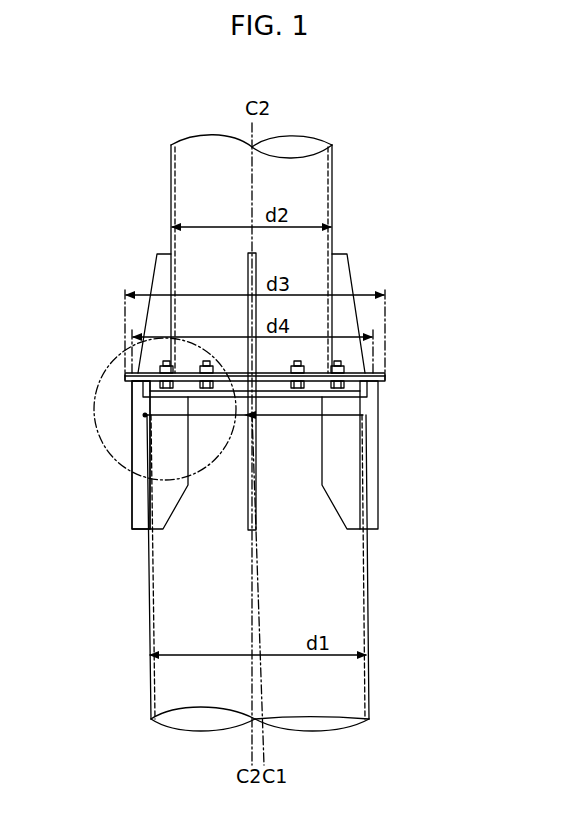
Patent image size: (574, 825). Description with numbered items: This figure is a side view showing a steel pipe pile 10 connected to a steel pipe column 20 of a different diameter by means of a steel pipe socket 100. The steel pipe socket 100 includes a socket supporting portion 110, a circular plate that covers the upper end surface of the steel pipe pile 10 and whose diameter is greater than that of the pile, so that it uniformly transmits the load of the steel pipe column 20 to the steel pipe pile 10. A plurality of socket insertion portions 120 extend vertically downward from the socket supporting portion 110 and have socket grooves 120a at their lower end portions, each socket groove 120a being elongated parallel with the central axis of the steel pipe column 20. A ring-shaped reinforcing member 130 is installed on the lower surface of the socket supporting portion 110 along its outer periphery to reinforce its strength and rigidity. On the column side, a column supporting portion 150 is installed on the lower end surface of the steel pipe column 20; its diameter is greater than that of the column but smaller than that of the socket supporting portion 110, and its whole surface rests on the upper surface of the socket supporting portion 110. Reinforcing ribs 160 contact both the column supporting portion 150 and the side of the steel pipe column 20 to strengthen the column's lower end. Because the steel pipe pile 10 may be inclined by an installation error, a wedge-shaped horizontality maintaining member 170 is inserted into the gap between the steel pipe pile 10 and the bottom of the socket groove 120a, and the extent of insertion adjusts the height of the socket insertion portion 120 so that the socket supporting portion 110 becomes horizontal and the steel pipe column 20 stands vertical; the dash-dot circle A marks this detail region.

The steel pipe pile 10 is at (369, 605).
The steel pipe column 20 is at (332, 190).
The steel pipe socket 100 is at (458, 388).
The socket supporting portion 110 is at (385, 377).
The socket insertion portions 120 is at (378, 475).
The socket groove 120a is at (143, 515).
The reinforcing member 130 is at (368, 392).
The column supporting portion 150 is at (130, 373).
The reinforcing ribs 160 is at (152, 285).
The horizontality maintaining member 170 is at (145, 415).
The detail region A is at (102, 448).